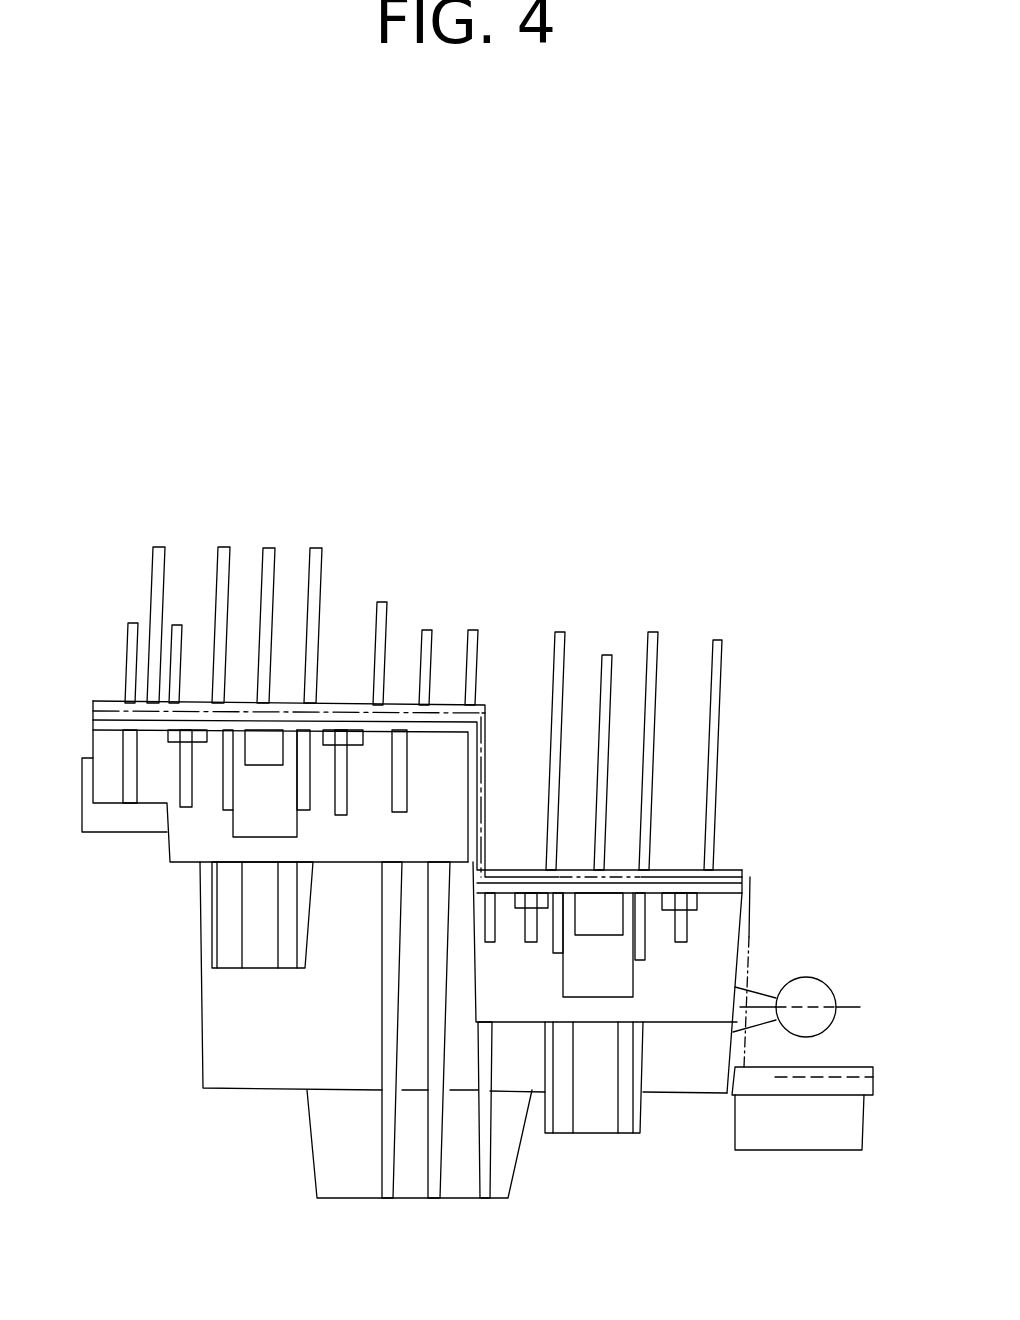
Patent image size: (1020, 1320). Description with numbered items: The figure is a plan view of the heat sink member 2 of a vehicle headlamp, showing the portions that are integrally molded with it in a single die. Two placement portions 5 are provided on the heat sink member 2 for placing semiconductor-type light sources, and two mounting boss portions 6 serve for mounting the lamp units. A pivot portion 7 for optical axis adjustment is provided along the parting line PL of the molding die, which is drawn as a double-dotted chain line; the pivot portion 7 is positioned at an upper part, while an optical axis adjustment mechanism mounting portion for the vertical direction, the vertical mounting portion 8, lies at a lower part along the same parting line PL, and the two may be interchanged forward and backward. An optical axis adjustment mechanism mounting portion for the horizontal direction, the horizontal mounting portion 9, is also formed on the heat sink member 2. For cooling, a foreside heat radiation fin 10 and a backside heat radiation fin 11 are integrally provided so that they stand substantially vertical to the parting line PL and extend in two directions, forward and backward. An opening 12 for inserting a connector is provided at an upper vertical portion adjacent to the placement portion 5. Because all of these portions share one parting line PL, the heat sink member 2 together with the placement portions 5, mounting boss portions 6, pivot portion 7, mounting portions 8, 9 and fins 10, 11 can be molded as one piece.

The heat sink member 2 is at (488, 688).
The placement portion 5 is at (260, 815).
The mounting boss portion 6 is at (230, 972).
The pivot portion 7 is at (806, 977).
The vertical mounting portion 8 is at (828, 1150).
The horizontal mounting portion 9 is at (90, 832).
The foreside heat radiation fin 10 is at (180, 780).
The backside heat radiation fin 11 is at (165, 565).
The opening 12 is at (266, 763).
The parting line PL is at (84, 707).